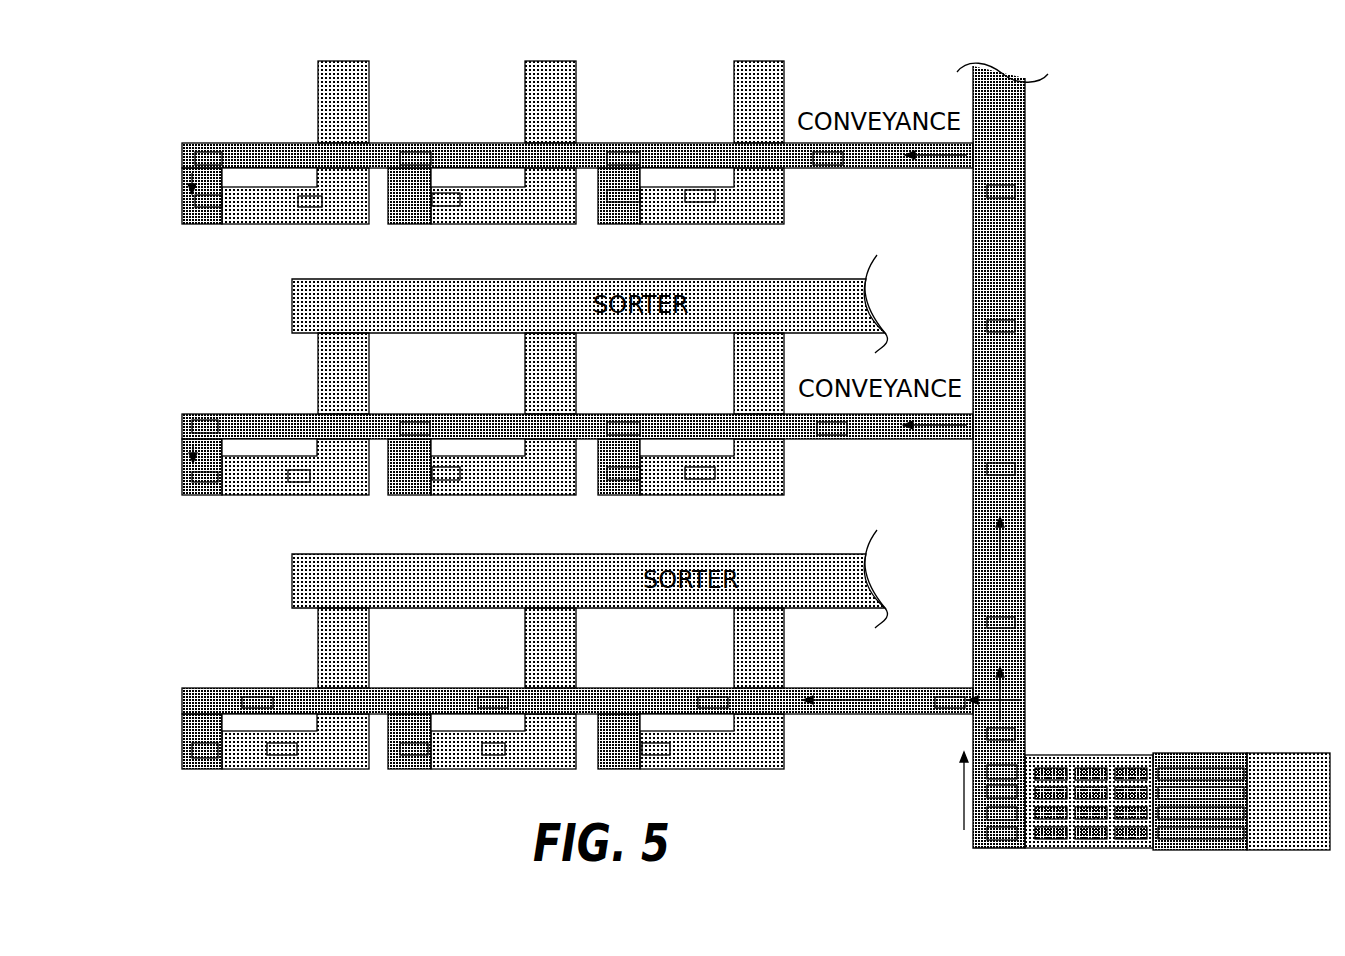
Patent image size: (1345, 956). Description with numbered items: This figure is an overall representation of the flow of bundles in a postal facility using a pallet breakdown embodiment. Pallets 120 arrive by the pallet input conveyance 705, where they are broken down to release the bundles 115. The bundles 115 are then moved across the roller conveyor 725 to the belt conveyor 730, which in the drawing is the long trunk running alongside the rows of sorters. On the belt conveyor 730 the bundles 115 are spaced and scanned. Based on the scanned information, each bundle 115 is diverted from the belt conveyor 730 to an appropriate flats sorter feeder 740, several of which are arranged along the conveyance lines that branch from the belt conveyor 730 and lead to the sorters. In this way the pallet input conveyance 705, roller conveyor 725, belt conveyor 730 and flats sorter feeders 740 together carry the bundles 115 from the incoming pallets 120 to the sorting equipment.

The bundles 115 is at (1000, 320).
The pallets 120 is at (1198, 754).
The pallet input conveyance 705 is at (1280, 754).
The roller conveyor 725 is at (1097, 755).
The belt conveyor 730 is at (1025, 706).
The flats sorter feeder 740 is at (205, 224).